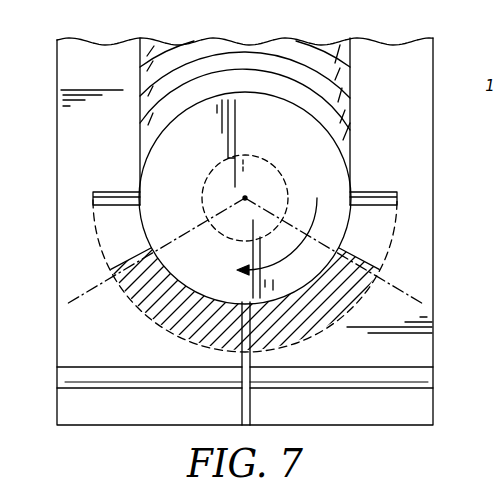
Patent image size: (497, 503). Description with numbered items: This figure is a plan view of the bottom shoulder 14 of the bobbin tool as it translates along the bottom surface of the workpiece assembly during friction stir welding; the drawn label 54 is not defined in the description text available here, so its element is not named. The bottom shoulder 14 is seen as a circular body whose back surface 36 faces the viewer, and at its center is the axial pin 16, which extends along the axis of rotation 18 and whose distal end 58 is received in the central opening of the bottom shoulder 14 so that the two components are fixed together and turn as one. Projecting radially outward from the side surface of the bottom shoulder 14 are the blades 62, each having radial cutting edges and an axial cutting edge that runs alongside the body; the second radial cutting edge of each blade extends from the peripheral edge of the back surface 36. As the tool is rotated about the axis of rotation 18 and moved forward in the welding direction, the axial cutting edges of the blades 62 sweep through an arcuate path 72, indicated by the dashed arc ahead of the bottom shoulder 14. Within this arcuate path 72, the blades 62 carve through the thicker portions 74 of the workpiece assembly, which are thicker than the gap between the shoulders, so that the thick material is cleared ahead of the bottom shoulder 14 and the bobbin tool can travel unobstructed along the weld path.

The bottom shoulder 14 is at (284, 139).
The axial pin 16 is at (214, 158).
The axis of rotation 18 is at (245, 198).
The back surface 36 is at (331, 170).
The housing 54 is at (403, 77).
The distal end 58 is at (245, 157).
The blade 62 is at (118, 192).
The arcuate path 72 is at (150, 298).
The thicker portions 74 is at (335, 382).